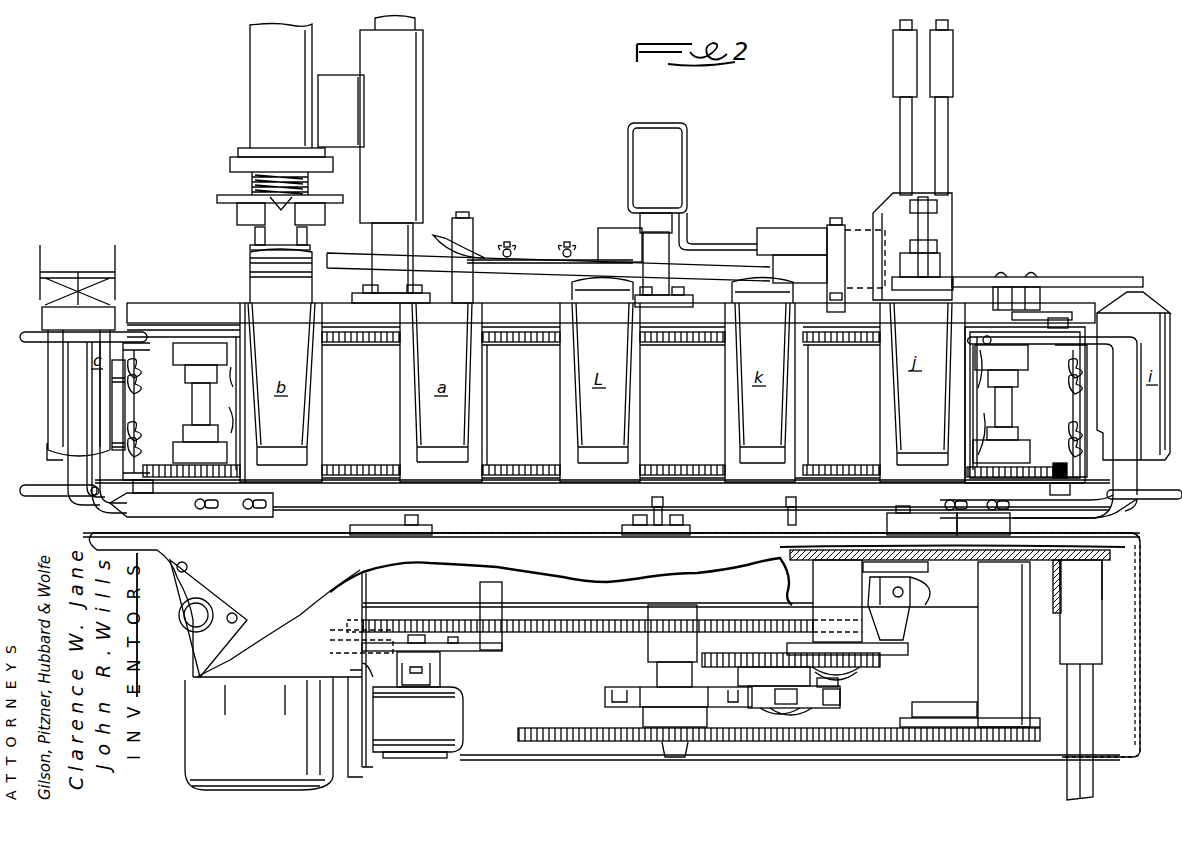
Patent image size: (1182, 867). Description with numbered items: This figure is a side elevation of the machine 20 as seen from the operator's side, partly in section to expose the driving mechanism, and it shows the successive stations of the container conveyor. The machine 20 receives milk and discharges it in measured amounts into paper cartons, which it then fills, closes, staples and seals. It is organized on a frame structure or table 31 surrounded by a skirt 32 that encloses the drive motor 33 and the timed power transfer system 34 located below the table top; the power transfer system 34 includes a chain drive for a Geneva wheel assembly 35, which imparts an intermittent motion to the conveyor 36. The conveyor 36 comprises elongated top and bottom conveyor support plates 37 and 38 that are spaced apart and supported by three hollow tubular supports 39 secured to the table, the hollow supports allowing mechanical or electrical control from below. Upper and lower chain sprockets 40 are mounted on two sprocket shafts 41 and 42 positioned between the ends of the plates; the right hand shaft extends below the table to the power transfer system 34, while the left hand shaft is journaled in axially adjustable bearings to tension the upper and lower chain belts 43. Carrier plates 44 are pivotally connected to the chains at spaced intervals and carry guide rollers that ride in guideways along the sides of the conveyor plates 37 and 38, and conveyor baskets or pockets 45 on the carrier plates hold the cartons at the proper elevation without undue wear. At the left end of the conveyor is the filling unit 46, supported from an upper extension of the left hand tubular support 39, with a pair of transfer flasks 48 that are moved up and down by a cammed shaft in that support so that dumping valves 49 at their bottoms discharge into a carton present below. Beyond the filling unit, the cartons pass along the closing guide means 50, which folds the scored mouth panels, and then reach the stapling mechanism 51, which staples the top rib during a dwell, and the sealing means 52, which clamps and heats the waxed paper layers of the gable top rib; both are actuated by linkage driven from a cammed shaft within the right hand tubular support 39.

The machine 20 is at (1130, 203).
The frame structure or table 31 is at (1103, 533).
The skirt 32 is at (1125, 662).
The drive motor 33 is at (325, 770).
The timed power transfer system 34 is at (641, 658).
The Geneva wheel assembly 35 is at (617, 707).
The conveyor 36 is at (1091, 492).
The top conveyor support plate 37 is at (826, 490).
The bottom conveyor support plate 38 is at (856, 322).
The tubular supports 39 is at (410, 243).
The chain sprockets 40 is at (603, 403).
The sprocket shaft 41 is at (1010, 413).
The sprocket shaft 42 is at (192, 403).
The chain belts 43 is at (684, 462).
The carrier plates 44 is at (487, 393).
The conveyor baskets or pockets 45 is at (468, 428).
The filling unit 46 is at (234, 150).
The transfer flasks 48 is at (256, 87).
The dumping valves 49 is at (258, 238).
The closing guide means 50 is at (586, 250).
The stapling mechanism 51 is at (948, 181).
The sealing means 52 is at (963, 238).